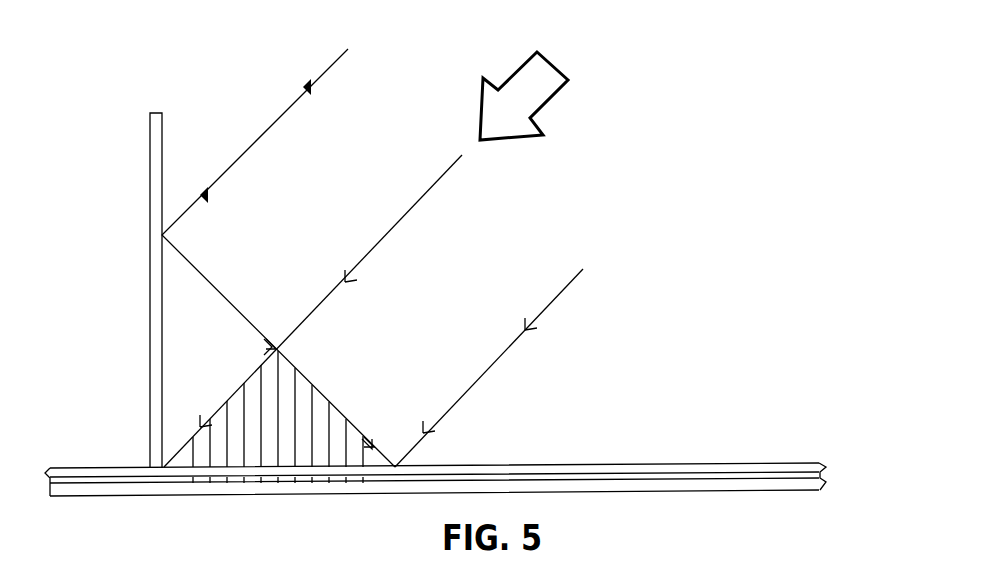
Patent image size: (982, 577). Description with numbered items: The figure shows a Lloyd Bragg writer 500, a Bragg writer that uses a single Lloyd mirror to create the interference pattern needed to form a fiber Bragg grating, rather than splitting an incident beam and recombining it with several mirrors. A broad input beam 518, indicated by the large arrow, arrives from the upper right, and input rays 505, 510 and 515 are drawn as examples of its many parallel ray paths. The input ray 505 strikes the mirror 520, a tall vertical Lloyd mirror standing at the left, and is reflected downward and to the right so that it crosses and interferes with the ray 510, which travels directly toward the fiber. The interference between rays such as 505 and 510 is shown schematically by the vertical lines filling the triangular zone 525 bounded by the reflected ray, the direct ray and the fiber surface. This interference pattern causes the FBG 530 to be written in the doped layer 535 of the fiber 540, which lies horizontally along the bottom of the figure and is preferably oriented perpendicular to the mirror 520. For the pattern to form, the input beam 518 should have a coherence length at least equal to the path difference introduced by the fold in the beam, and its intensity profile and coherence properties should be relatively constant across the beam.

The Lloyd Bragg writer 500 is at (682, 74).
The input ray 505 is at (290, 102).
The input ray 510 is at (421, 197).
The input ray 515 is at (558, 294).
The input beam 518 is at (556, 96).
The mirror 520 is at (150, 146).
The zone 525 is at (302, 393).
The FBG 530 is at (284, 478).
The doped layer 535 is at (826, 474).
The fiber 540 is at (677, 449).